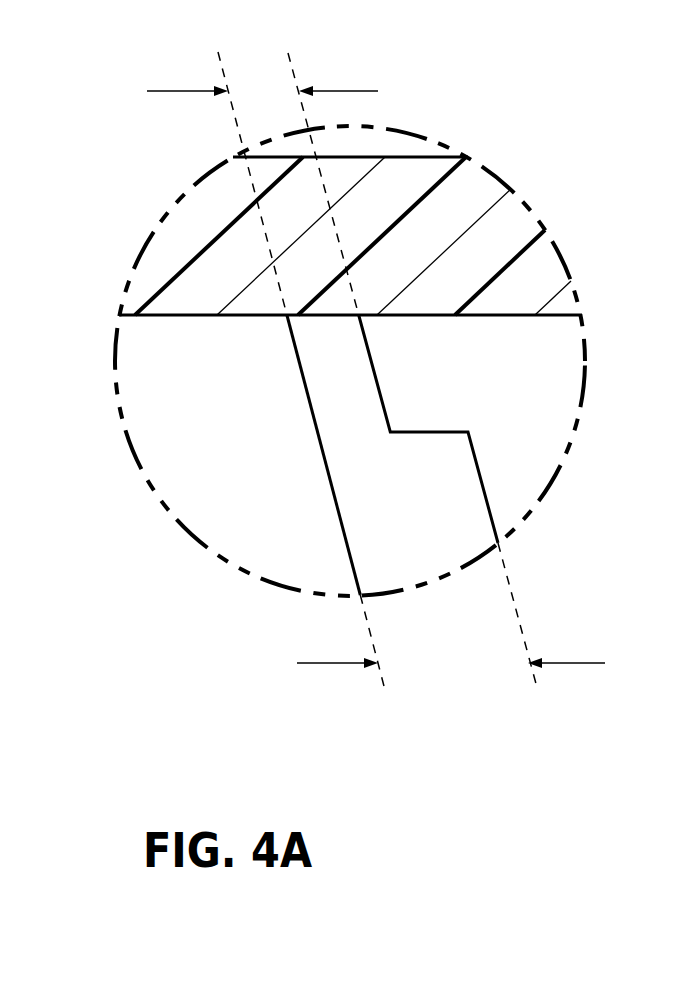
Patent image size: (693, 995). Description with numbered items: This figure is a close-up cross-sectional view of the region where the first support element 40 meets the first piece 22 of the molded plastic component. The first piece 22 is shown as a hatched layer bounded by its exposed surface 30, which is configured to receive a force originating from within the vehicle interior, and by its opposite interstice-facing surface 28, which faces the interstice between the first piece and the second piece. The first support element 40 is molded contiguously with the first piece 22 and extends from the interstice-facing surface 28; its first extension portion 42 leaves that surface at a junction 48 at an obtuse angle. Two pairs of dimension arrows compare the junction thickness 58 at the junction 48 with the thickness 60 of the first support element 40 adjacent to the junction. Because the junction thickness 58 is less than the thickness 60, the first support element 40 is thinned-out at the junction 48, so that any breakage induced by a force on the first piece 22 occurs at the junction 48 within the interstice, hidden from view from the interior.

The first piece 22 is at (490, 242).
The interstice-facing surface 28 is at (492, 315).
The exposed surface 30 is at (392, 158).
The first support element 40 is at (345, 540).
The first extension portion 42 is at (377, 488).
The junction 48 is at (328, 335).
The junction thickness 58 is at (180, 91).
The thickness 60 is at (330, 663).